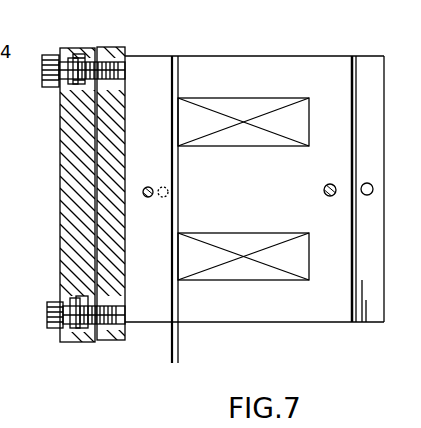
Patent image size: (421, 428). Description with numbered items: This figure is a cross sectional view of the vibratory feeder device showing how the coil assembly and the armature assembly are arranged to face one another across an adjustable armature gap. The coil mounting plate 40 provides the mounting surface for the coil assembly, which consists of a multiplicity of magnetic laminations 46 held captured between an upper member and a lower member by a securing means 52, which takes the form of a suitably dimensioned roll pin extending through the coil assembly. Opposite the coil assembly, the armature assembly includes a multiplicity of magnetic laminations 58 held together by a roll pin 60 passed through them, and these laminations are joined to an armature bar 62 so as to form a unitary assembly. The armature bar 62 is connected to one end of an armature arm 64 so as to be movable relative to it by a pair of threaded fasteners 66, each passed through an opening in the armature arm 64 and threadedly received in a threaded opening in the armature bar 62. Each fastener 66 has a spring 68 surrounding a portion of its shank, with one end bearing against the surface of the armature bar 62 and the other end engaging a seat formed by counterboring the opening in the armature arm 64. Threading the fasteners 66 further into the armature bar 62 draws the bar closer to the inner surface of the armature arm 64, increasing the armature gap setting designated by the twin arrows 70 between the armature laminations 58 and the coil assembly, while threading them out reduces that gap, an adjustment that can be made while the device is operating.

The coil mounting plate 40 is at (365, 68).
The magnetic laminations 46 is at (289, 66).
The securing means 52 is at (323, 190).
The magnetic laminations 58 is at (158, 60).
The roll pin 60 is at (147, 186).
The armature bar 62 is at (123, 50).
The armature arm 64 is at (60, 172).
The threaded fasteners 66 is at (50, 86).
The spring 68 is at (66, 56).
The twin arrows 70 is at (171, 357).